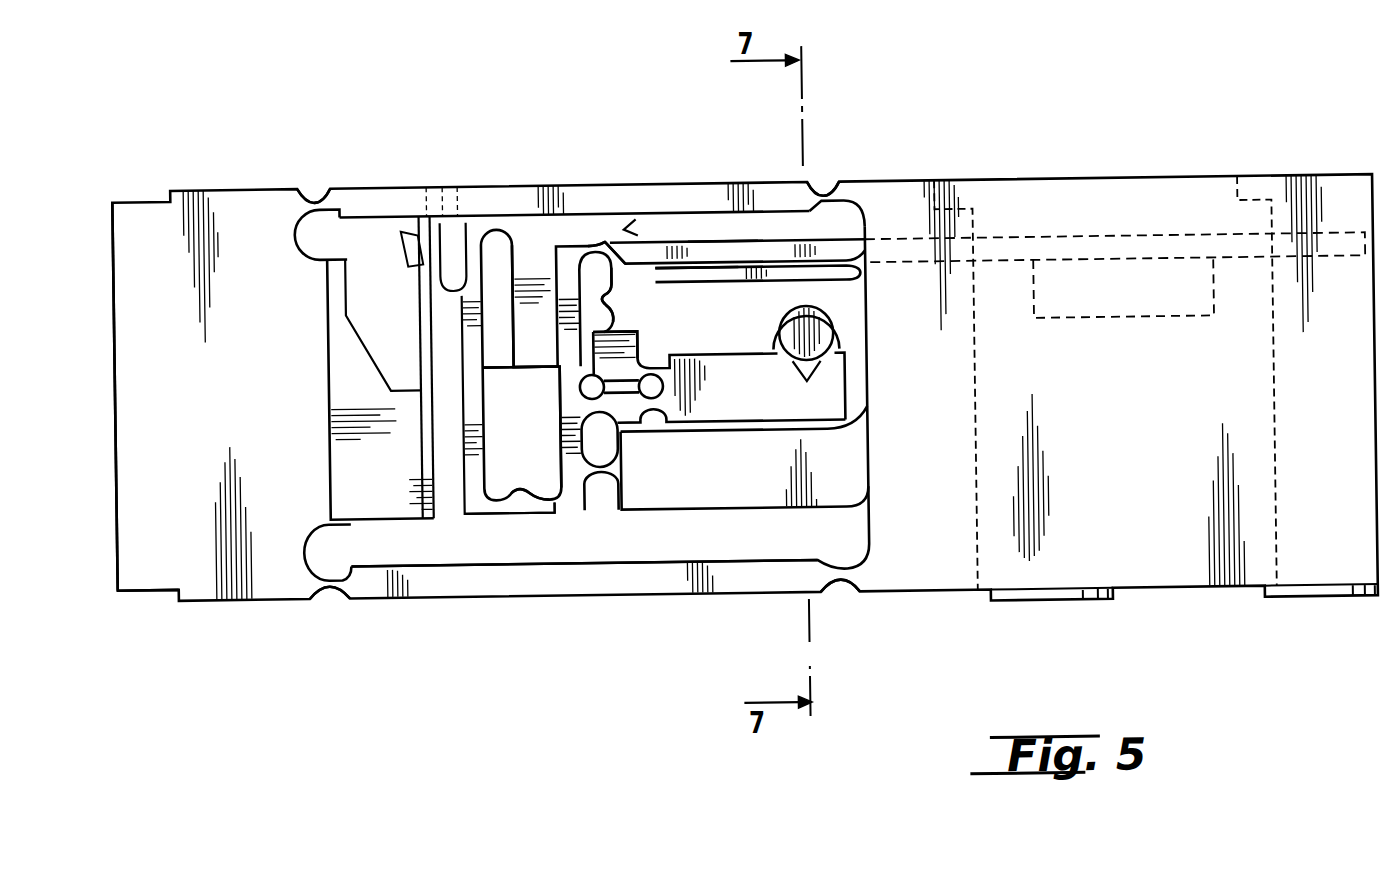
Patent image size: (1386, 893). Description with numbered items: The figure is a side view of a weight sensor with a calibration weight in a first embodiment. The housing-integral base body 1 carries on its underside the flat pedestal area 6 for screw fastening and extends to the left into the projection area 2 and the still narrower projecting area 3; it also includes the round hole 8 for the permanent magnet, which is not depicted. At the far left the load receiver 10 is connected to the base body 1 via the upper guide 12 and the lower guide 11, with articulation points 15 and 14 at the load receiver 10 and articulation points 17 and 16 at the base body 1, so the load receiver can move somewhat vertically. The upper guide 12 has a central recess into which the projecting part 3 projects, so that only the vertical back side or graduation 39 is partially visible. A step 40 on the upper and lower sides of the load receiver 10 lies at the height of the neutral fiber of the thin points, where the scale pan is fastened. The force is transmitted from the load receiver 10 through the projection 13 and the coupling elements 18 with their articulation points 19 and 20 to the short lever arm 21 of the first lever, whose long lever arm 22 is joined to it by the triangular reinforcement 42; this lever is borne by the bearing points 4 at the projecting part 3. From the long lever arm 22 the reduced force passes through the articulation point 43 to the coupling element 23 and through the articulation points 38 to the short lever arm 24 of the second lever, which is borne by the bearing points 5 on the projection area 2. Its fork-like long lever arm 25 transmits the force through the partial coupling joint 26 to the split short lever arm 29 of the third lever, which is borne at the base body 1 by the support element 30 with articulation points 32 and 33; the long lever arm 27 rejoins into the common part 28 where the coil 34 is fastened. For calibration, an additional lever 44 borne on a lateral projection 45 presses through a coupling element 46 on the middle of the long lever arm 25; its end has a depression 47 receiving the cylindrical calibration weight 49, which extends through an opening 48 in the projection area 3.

The base body 1 is at (1160, 594).
The projection area 2 is at (667, 510).
The projecting area 3 is at (500, 226).
The bearing points 4 is at (481, 212).
The bearing points 5 is at (600, 478).
The pedestal area 6 is at (1035, 605).
The round hole 8 is at (980, 421).
The load receiver 10 is at (203, 594).
The lower guide 11 is at (757, 565).
The upper guide 12 is at (766, 183).
The projection 13 is at (350, 483).
The articulation point 14 is at (326, 594).
The articulation point 15 is at (322, 184).
The articulation point 16 is at (836, 594).
The articulation point 17 is at (838, 184).
The coupling elements 18 is at (418, 294).
The articulation point 19 is at (417, 368).
The articulation point 20 is at (406, 253).
The short lever arm 21 is at (421, 212).
The long lever arm 22 is at (478, 406).
The coupling element 23 is at (520, 500).
The short lever arm 24 is at (580, 511).
The long lever arm 25 is at (571, 335).
The partial coupling joint 26 is at (606, 236).
The long lever arm 27 is at (702, 240).
The common part 28 is at (1077, 242).
The short lever arm 29 is at (615, 300).
The support element 30 is at (729, 280).
The articulation point 32 is at (618, 281).
The articulation point 33 is at (857, 252).
The coil 34 is at (1185, 322).
The articulation points 38 is at (547, 488).
The graduation 39 is at (632, 226).
The step 40 is at (140, 194).
The triangular reinforcement 42 is at (402, 230).
The articulation point 43 is at (507, 505).
The additional lever 44 is at (828, 428).
The lateral projection 45 is at (628, 351).
The coupling element 46 is at (627, 426).
The depression 47 is at (795, 375).
The opening 48 is at (849, 313).
The calibration weight 49 is at (835, 343).